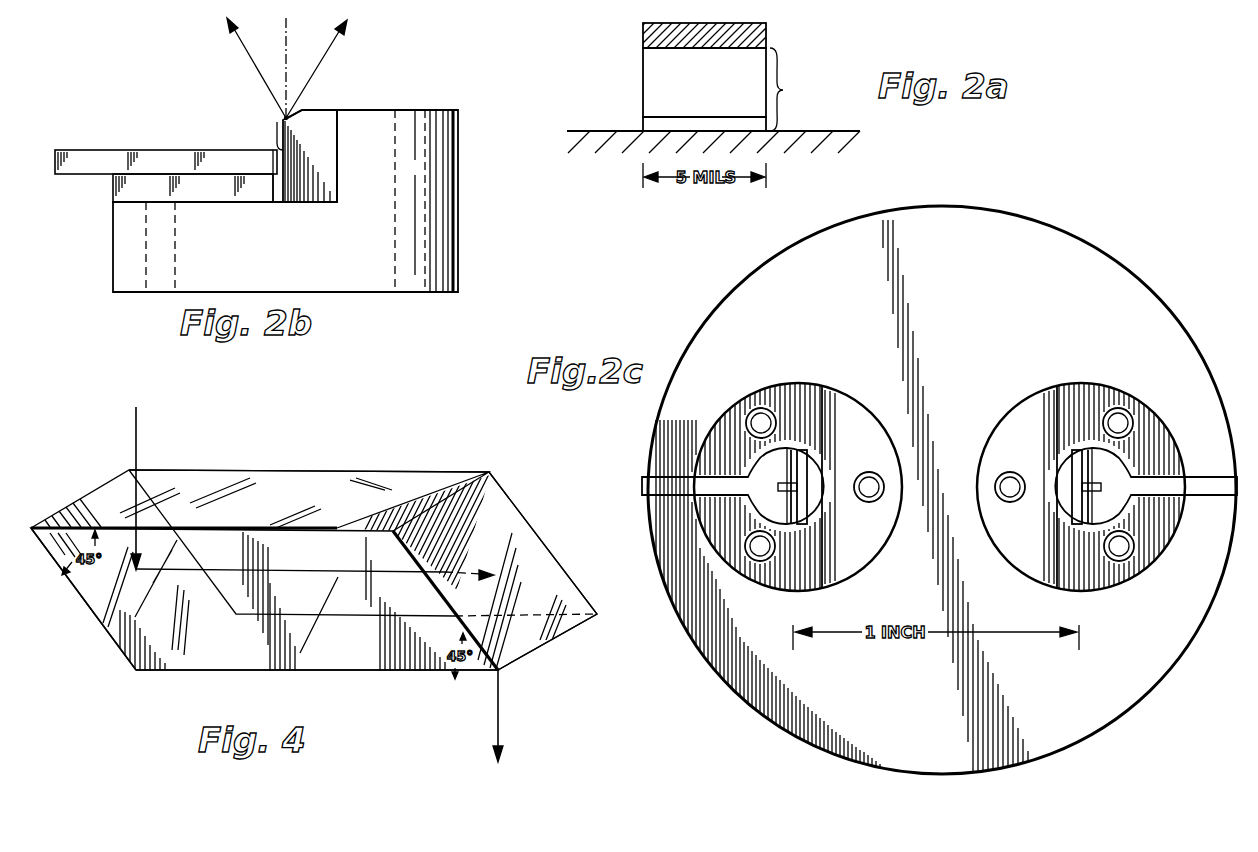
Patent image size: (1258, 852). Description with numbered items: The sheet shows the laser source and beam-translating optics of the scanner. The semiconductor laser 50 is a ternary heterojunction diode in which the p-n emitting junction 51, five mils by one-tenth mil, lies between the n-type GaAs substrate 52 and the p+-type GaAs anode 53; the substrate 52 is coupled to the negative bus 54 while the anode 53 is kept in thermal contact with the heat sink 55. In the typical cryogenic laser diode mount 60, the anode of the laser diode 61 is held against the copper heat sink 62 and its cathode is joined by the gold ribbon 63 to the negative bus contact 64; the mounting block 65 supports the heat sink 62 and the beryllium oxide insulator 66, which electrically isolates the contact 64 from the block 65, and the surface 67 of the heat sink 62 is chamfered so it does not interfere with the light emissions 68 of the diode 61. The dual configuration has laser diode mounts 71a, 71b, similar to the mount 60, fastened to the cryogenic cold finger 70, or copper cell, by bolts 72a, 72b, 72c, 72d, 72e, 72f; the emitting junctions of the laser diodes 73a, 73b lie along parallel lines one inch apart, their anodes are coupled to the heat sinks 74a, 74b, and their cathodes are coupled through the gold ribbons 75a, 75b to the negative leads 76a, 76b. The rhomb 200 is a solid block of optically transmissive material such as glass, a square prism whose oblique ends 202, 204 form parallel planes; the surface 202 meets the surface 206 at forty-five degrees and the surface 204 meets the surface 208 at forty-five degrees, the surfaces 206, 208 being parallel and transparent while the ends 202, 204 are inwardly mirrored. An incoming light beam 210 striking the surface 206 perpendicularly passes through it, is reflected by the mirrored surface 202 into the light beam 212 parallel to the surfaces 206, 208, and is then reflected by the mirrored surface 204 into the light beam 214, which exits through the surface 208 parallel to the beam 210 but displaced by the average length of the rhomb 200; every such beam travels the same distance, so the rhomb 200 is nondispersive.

In FIG. 2A, the semiconductor laser 50 is at (793, 89).
In FIG. 2A, the p-n emitting junction 51 is at (706, 117).
In FIG. 2A, the n-type GaAs substrate 52 is at (643, 74).
In FIG. 2A, the p+-type GaAs anode 53 is at (643, 125).
In FIG. 2A, the negative bus 54 is at (643, 37).
In FIG. 2A, the heat sink 55 is at (823, 131).
In FIG. 2B, the cryogenic laser diode mount 60 is at (170, 70).
In FIG. 2B, the laser diode 61 is at (284, 118).
In FIG. 2B, the copper heat sink 62 is at (318, 110).
In FIG. 2B, the gold ribbon 63 is at (266, 149).
In FIG. 2B, the negative bus contact 64 is at (110, 150).
In FIG. 2B, the mounting block 65 is at (372, 110).
In FIG. 2B, the beryllium oxide insulator 66 is at (113, 186).
In FIG. 2B, the chamfered surface 67 is at (291, 119).
In FIG. 2B, the light emissions 68 is at (287, 34).
In FIG. 2C, the cryogenic cold finger 70 is at (1116, 282).
In FIG. 2C, the laser diode mount 71a is at (841, 396).
In FIG. 2C, the laser diode mount 71b is at (1066, 396).
In FIG. 2C, the bolt 72a is at (778, 410).
In FIG. 2C, the bolt 72b is at (869, 471).
In FIG. 2C, the bolt 72c is at (776, 556).
In FIG. 2C, the bolt 72d is at (1108, 412).
In FIG. 2C, the bolt 72e is at (1010, 471).
In FIG. 2C, the bolt 72f is at (1135, 546).
In FIG. 2C, the laser diode 73a is at (800, 490).
In FIG. 2C, the laser diode 73b is at (1080, 490).
In FIG. 2C, the heat sink 74a is at (800, 452).
In FIG. 2C, the heat sink 74b is at (1080, 452).
In FIG. 2C, the gold ribbon 75a is at (790, 524).
In FIG. 2C, the gold ribbon 75b is at (1122, 478).
In FIG. 2C, the negative lead 76a is at (750, 480).
In FIG. 2C, the negative lead 76b is at (1133, 506).
In FIG. 4, the rhomb 200 is at (354, 446).
In FIG. 4, the oblique end surface 202 is at (111, 640).
In FIG. 4, the oblique end surface 204 is at (536, 534).
In FIG. 4, the entrance surface 206 is at (276, 474).
In FIG. 4, the exit surface 208 is at (344, 670).
In FIG. 4, the incoming light beam 210 is at (138, 424).
In FIG. 4, the internal light beam 212 is at (296, 569).
In FIG. 4, the outgoing light beam 214 is at (500, 717).